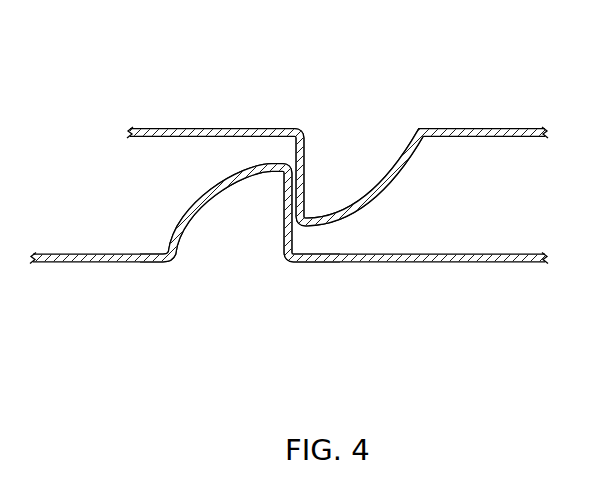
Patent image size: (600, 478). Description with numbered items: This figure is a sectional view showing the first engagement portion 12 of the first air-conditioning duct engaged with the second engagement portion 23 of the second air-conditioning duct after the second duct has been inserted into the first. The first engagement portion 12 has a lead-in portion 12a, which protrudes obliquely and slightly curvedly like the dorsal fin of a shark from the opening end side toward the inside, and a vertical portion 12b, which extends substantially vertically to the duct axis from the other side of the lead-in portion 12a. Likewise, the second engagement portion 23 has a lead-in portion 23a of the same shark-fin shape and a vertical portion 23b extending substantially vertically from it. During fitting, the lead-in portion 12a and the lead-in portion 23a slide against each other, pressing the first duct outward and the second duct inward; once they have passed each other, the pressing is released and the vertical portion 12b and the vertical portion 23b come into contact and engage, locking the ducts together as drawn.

The first engagement portion 12 is at (360, 124).
The lead-in portion 12a is at (399, 176).
The vertical portion 12b is at (292, 149).
The second engagement portion 23 is at (241, 272).
The lead-in portion 23a is at (211, 198).
The vertical portion 23b is at (294, 236).